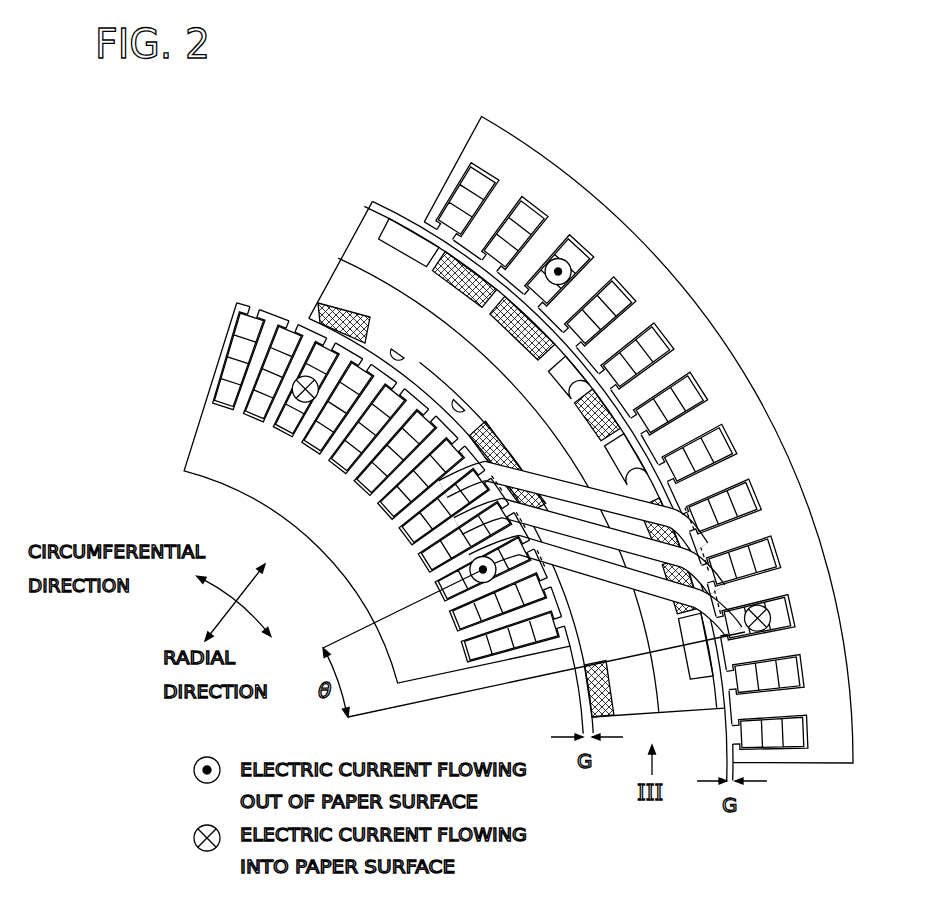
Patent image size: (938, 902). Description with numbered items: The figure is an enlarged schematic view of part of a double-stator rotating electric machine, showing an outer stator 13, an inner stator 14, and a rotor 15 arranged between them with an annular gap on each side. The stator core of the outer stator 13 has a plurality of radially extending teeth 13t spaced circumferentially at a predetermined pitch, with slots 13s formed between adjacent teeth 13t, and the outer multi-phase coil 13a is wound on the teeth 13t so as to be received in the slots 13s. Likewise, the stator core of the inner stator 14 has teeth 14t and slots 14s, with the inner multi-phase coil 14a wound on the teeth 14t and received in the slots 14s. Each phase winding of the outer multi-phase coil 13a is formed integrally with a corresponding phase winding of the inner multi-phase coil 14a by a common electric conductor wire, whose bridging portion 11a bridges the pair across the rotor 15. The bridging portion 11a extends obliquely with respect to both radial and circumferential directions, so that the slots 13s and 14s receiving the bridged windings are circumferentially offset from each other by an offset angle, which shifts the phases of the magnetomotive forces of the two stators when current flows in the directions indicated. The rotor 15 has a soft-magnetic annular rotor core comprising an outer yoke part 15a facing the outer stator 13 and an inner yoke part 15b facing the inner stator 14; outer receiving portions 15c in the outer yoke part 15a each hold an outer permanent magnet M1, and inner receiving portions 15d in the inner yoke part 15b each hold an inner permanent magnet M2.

The bridging portion 11a is at (565, 487).
The outer stator 13 is at (604, 428).
The outer multi-phase coil 13a is at (497, 152).
The slots 13s is at (632, 394).
The teeth 13t is at (697, 486).
The inner stator 14 is at (346, 475).
The inner multi-phase coil 14a is at (229, 386).
The slots 14s is at (352, 449).
The teeth 14t is at (479, 506).
The rotor 15 is at (482, 456).
The outer yoke part 15a is at (544, 454).
The inner yoke part 15b is at (484, 487).
The outer receiving portions 15c is at (580, 393).
The inner receiving portions 15d is at (457, 407).
The outer permanent magnets M1 is at (492, 318).
The inner permanent magnets M2 is at (505, 437).